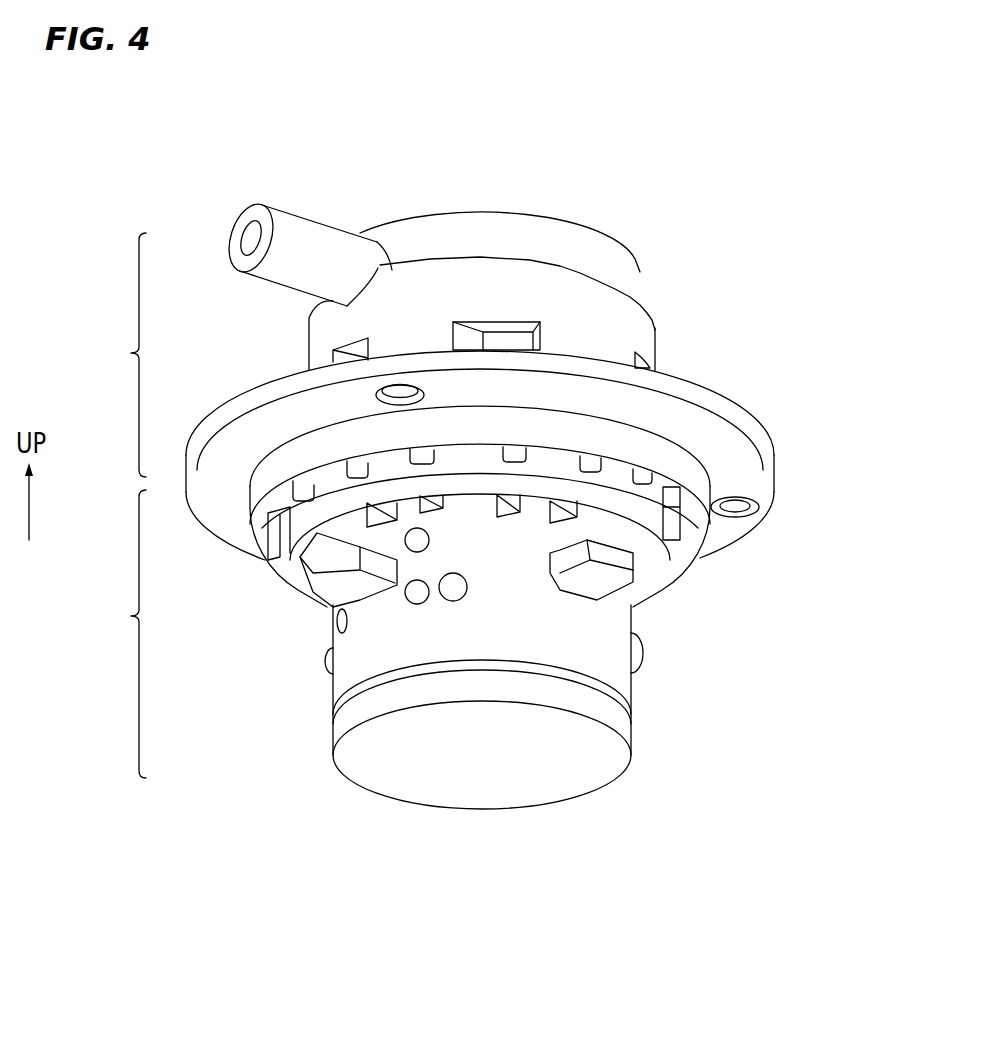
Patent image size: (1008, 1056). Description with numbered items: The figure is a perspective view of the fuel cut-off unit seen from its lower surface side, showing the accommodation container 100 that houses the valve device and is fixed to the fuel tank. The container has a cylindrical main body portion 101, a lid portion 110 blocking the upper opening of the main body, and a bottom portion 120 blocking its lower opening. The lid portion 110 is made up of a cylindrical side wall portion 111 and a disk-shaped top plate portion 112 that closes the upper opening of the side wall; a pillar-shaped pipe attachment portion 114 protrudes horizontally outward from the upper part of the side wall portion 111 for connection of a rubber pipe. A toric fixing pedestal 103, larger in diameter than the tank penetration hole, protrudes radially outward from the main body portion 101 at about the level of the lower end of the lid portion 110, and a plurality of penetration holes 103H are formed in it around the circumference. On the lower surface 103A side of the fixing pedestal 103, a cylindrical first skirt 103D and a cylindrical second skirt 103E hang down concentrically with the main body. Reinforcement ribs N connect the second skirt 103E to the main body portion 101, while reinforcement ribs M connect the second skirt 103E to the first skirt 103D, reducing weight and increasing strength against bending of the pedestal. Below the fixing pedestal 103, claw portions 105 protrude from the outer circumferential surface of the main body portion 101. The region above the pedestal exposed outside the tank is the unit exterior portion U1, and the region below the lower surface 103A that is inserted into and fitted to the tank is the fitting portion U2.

The accommodation container 100 is at (500, 912).
The main body portion 101 is at (636, 699).
The fixing pedestal 103 is at (757, 418).
The lower surface 103A is at (745, 475).
The penetration holes 103H is at (750, 508).
The first skirt 103D is at (707, 500).
The second skirt 103E is at (697, 490).
The claw portions 105 is at (607, 577).
The lid portion 110 is at (672, 301).
The side wall portion 111 is at (655, 347).
The top plate portion 112 is at (577, 223).
The pipe attachment portion 114 is at (322, 220).
The bottom portion 120 is at (513, 779).
The reinforcement ribs M is at (265, 540).
The reinforcement ribs N is at (327, 548).
The unit exterior portion U1 is at (122, 355).
The fitting portion U2 is at (122, 634).